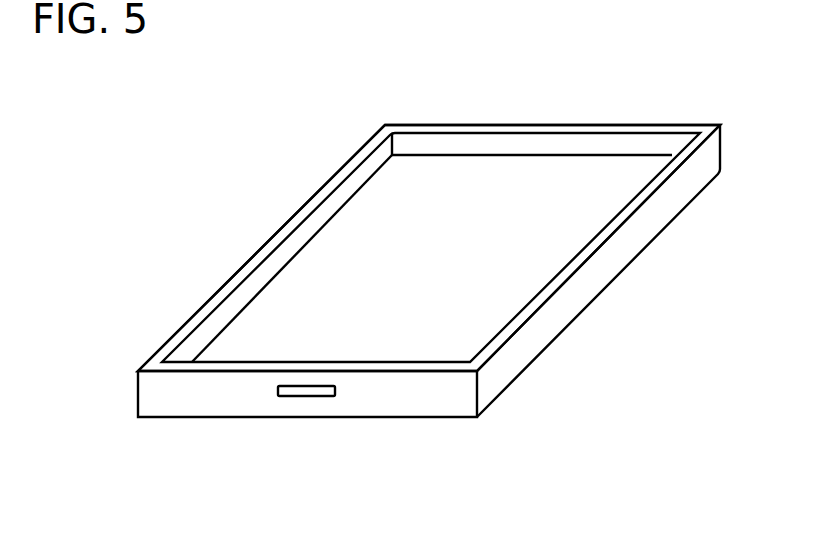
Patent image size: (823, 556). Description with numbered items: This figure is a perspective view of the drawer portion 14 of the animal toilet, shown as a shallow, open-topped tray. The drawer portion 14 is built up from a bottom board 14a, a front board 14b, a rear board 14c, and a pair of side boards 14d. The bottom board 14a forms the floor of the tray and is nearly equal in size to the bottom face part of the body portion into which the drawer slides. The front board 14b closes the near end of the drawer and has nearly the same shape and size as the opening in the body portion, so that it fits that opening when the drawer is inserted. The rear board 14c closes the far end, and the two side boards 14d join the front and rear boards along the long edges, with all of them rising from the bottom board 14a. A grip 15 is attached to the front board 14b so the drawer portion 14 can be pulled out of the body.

The drawer portion 14 is at (432, 264).
The bottom board 14a is at (377, 250).
The front board 14b is at (415, 402).
The rear board 14c is at (508, 123).
The side boards 14d is at (603, 270).
The grip 15 is at (303, 397).